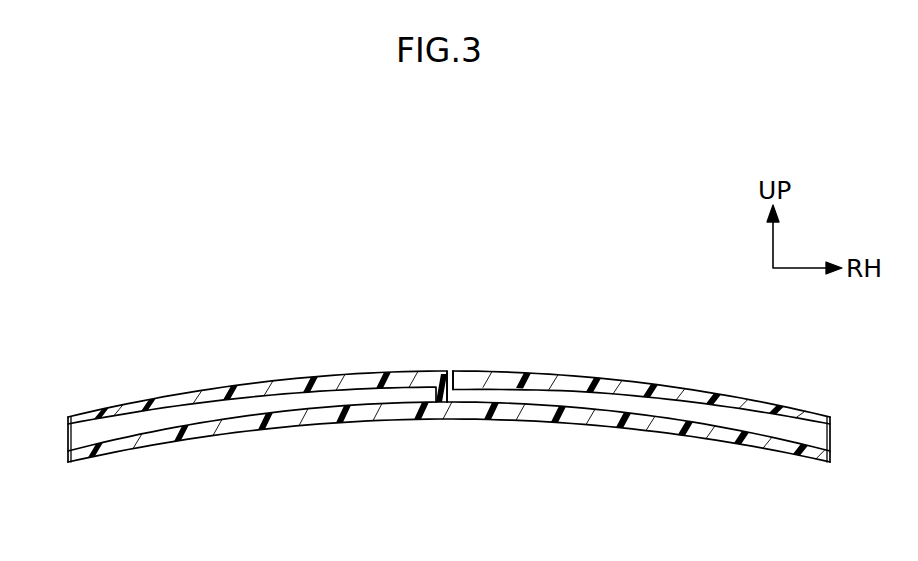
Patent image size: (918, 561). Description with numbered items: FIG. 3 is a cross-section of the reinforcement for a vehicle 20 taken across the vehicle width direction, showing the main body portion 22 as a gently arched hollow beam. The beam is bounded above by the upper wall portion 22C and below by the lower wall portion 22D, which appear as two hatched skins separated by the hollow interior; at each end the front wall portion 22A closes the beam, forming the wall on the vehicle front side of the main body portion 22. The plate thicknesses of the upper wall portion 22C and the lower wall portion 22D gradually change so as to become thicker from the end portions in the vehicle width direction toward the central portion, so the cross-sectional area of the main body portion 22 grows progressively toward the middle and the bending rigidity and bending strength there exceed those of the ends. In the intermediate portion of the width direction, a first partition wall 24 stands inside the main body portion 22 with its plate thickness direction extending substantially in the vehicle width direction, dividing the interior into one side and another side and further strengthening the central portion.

The reinforcement for a vehicle 20 is at (422, 395).
The main body portion 22 is at (422, 406).
The front wall portion 22A is at (68, 448).
The upper wall portion 22C is at (358, 375).
The lower wall portion 22D is at (320, 424).
The first partition wall 24 is at (455, 390).